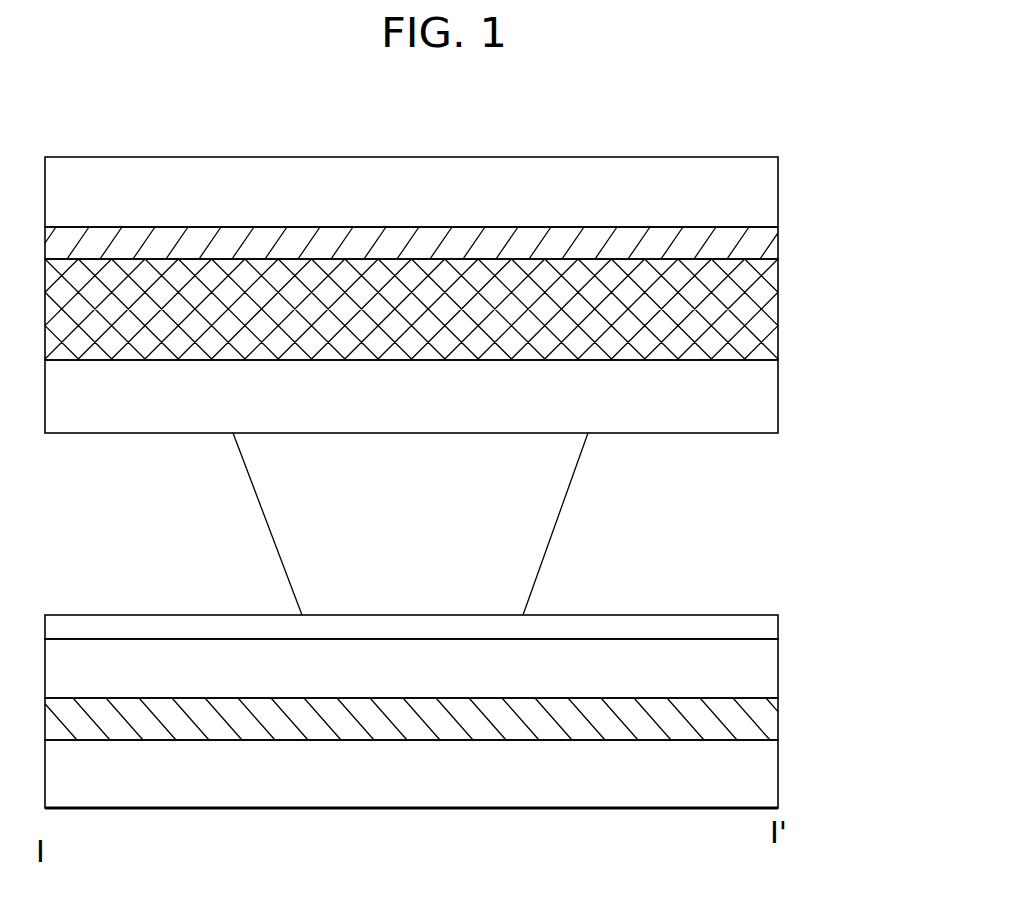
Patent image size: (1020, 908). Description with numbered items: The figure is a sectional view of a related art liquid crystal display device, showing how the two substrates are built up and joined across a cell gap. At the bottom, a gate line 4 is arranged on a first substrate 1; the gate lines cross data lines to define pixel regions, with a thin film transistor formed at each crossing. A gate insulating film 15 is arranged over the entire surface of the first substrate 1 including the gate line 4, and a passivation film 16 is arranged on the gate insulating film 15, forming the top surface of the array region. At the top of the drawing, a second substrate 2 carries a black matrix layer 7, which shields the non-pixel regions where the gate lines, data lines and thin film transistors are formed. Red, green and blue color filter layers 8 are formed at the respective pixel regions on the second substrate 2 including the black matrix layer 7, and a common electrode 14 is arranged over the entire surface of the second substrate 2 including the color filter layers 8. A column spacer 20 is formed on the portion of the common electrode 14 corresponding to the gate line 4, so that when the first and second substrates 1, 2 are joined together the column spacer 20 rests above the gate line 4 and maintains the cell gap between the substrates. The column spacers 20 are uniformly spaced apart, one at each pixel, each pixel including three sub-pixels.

The first substrate 1 is at (763, 773).
The gate line 4 is at (763, 722).
The gate insulating film 15 is at (763, 678).
The passivation film 16 is at (763, 631).
The column spacer 20 is at (538, 527).
The common electrode 14 is at (758, 398).
The color filter layer 8 is at (758, 327).
The black matrix layer 7 is at (758, 247).
The second substrate 2 is at (758, 195).